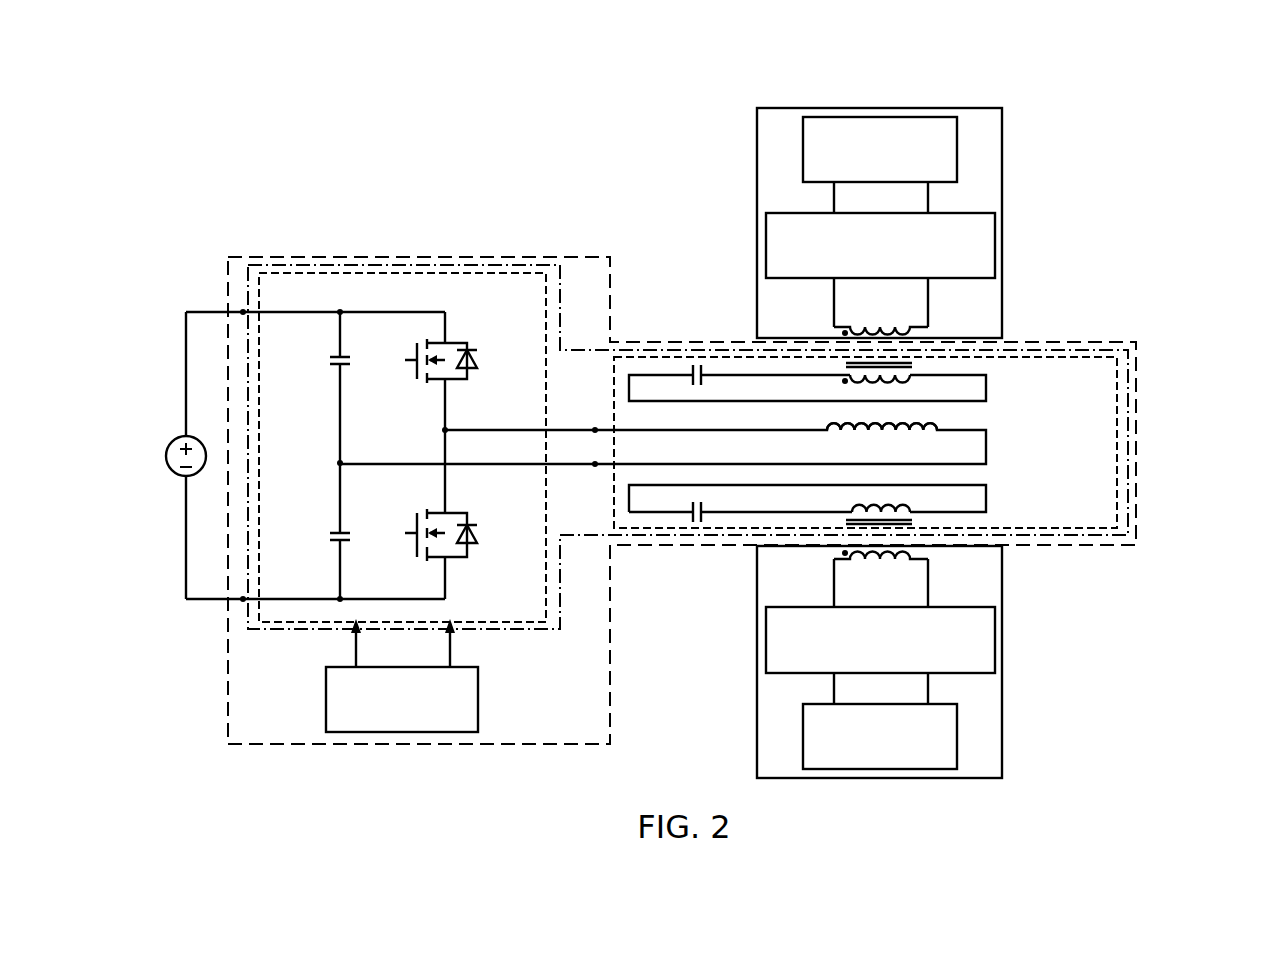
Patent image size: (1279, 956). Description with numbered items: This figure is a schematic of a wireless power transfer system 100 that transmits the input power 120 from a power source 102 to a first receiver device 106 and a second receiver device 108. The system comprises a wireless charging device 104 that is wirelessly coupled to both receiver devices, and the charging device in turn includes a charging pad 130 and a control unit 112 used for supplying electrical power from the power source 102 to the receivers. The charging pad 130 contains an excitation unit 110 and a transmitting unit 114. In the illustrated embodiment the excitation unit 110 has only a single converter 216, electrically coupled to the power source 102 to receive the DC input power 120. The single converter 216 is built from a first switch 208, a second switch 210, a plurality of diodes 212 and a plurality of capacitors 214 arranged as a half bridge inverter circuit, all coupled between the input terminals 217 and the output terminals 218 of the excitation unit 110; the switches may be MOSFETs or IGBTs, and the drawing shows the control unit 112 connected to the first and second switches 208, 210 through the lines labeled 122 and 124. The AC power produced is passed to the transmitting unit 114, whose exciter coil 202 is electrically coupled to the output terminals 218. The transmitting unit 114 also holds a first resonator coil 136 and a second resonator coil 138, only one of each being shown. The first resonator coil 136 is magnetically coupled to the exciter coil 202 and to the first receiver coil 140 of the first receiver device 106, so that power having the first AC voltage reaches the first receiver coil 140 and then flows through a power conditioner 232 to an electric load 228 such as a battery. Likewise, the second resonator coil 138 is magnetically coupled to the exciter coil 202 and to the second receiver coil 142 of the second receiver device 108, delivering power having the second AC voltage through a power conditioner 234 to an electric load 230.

The wireless power transfer system 100 is at (1165, 102).
The power source 102 is at (174, 444).
The wireless charging device 104 is at (563, 257).
The first receiver device 106 is at (880, 108).
The second receiver device 108 is at (880, 778).
The excitation unit 110 is at (448, 273).
The control unit 112 is at (478, 702).
The transmitting unit 114 is at (1118, 440).
The input power 120 is at (185, 345).
The first switching signal 122 is at (408, 359).
The second switching signal 124 is at (408, 533).
The charging pad 130 is at (290, 265).
The first resonator coil 136 is at (893, 380).
The second resonator coil 138 is at (893, 508).
The first receiver coil 140 is at (890, 328).
The second receiver coil 142 is at (880, 560).
The exciter coil 202 is at (918, 427).
The first switch 208 is at (410, 372).
The second switch 210 is at (410, 547).
The diodes 212 is at (477, 360).
The capacitors 214 is at (332, 365).
The single converter 216 is at (472, 307).
The input terminals 217 is at (241, 311).
The output terminals 218 is at (594, 463).
The electric load 228 is at (957, 149).
The electric load 230 is at (957, 737).
The power conditioner 232 is at (995, 245).
The power conditioner 234 is at (995, 639).